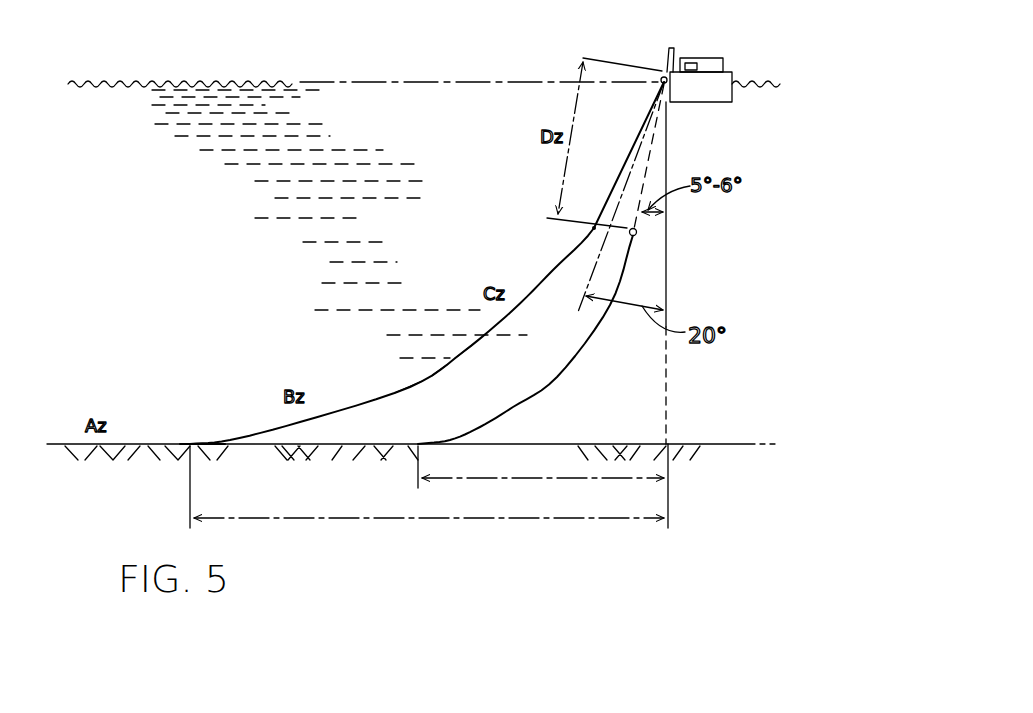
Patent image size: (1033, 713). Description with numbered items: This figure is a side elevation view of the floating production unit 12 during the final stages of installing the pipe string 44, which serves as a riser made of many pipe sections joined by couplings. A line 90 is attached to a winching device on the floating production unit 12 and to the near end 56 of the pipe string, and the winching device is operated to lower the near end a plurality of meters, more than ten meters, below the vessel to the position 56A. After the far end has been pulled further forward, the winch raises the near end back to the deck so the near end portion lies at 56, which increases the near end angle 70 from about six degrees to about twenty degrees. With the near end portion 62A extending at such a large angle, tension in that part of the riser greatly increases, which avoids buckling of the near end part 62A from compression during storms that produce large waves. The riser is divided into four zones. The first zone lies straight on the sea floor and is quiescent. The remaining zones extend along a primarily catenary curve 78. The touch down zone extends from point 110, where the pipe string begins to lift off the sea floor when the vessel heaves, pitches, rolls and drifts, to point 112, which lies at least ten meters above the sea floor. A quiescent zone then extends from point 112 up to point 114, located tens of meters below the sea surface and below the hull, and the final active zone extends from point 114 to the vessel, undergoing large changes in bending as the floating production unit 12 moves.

The floating production unit 12 is at (738, 70).
The near end of the pipe string 56 is at (656, 86).
The line 90 is at (656, 150).
The near end portion of the pipe string 62A is at (610, 191).
The near end angle 70 is at (657, 216).
The lowered position of the pipe string near end 56A is at (638, 238).
The point between zones Cz and Dz 114 is at (590, 230).
The pipe string 44 is at (466, 352).
The catenary curve 78 is at (440, 370).
The point between zones Bz and Cz 112 is at (406, 384).
The touch down point 110 is at (189, 441).